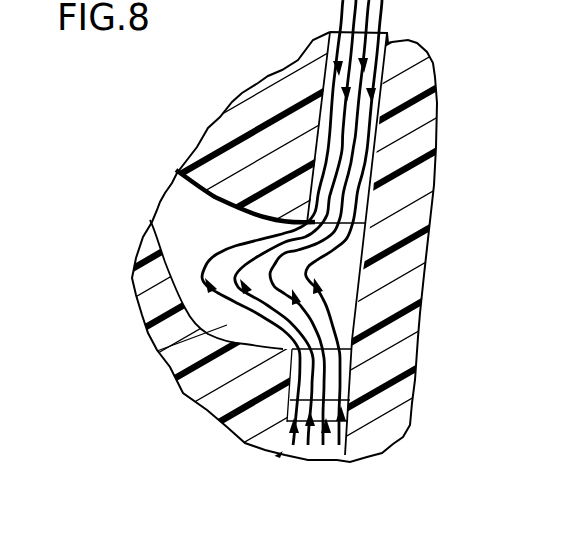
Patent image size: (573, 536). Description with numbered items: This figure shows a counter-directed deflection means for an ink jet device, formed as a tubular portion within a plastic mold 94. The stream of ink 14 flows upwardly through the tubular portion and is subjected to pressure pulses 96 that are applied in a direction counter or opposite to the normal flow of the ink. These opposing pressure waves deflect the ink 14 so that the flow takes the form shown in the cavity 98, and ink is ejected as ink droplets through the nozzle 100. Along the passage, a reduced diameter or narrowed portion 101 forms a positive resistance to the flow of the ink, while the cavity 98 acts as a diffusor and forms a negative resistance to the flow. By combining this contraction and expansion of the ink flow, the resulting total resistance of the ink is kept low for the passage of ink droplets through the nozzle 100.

The ink 14 is at (318, 440).
The plastic mold 94 is at (395, 335).
The pressure pulses 96 is at (360, 137).
The cavity 98 is at (170, 360).
The nozzle 100 is at (176, 198).
The reduced diameter or narrowed portion 101 is at (350, 380).